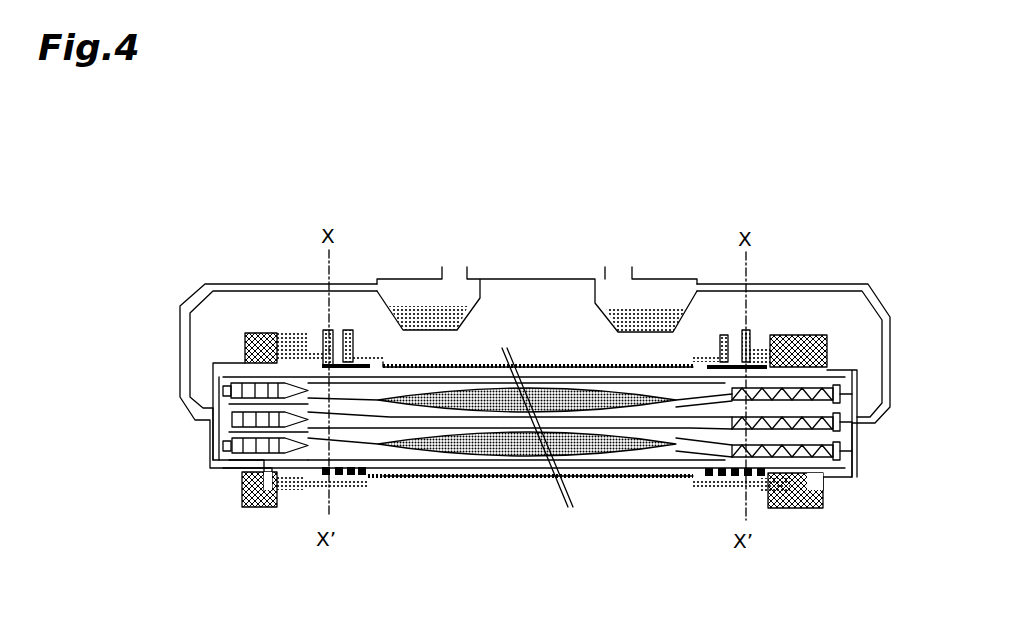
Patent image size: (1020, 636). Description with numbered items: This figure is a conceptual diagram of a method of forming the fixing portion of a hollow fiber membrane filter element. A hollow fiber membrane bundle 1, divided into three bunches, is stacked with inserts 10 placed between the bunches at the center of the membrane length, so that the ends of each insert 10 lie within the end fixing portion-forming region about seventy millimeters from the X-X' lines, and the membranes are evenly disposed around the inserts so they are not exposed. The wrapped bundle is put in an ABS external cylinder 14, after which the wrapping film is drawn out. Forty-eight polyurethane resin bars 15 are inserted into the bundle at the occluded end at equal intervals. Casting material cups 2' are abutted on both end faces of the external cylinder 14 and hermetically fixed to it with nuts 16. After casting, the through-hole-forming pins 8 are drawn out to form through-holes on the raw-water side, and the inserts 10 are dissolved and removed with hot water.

The hollow fiber membrane bundle 1 is at (352, 440).
The casting material cup 2' is at (278, 318).
The through-hole-forming pin 8 is at (787, 507).
The insert 10 is at (572, 453).
The external cylinder 14 is at (580, 363).
The polyurethane resin bar 15 is at (282, 507).
The nut 16 is at (813, 338).